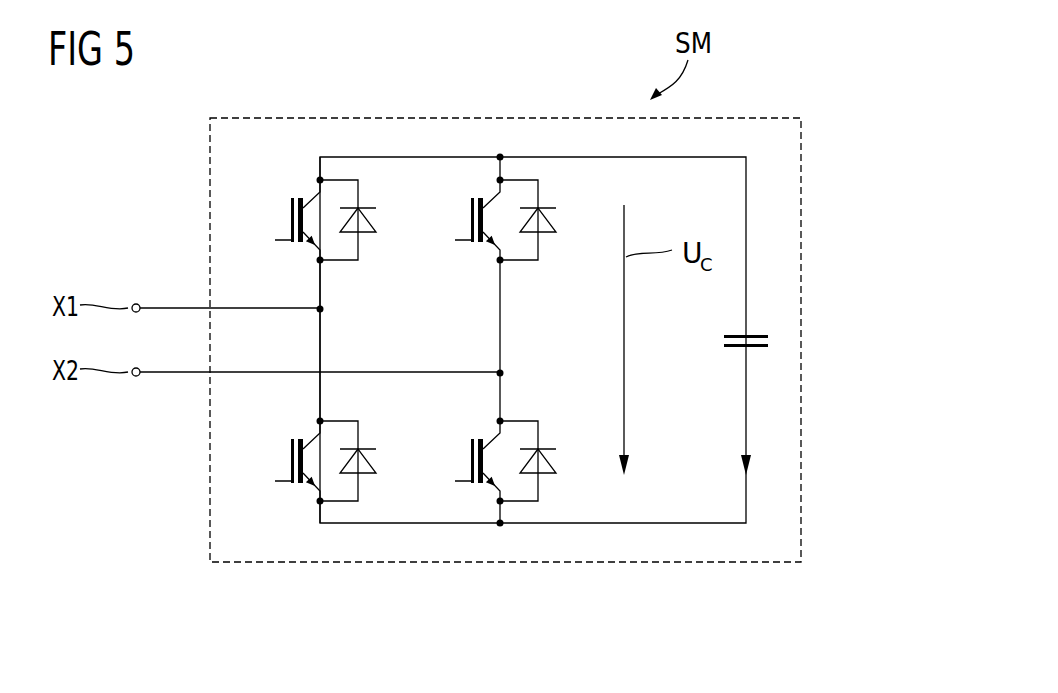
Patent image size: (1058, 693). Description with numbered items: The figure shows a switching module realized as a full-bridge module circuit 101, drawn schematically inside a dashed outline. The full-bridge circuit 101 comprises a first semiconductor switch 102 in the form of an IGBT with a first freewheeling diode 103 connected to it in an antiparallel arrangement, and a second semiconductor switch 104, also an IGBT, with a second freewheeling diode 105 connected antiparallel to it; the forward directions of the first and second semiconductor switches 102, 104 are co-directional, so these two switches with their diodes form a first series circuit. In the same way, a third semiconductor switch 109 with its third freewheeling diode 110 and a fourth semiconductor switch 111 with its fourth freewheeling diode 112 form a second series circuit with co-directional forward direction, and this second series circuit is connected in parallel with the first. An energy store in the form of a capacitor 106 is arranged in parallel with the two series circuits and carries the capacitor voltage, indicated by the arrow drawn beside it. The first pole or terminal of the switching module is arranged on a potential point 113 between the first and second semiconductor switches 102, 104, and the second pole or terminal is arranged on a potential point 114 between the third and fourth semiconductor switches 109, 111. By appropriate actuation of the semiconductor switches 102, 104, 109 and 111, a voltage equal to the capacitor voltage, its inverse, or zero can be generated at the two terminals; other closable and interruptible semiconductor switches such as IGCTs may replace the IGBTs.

The full-bridge module circuit 101 is at (803, 172).
The first semiconductor switch 102 is at (297, 194).
The first freewheeling diode 103 is at (370, 228).
The second semiconductor switch 104 is at (297, 483).
The second freewheeling diode 105 is at (377, 471).
The capacitor 106 is at (760, 334).
The third semiconductor switch 109 is at (477, 194).
The third freewheeling diode 110 is at (550, 228).
The fourth semiconductor switch 111 is at (477, 483).
The fourth freewheeling diode 112 is at (557, 471).
The potential point 113 is at (322, 311).
The potential point 114 is at (502, 371).